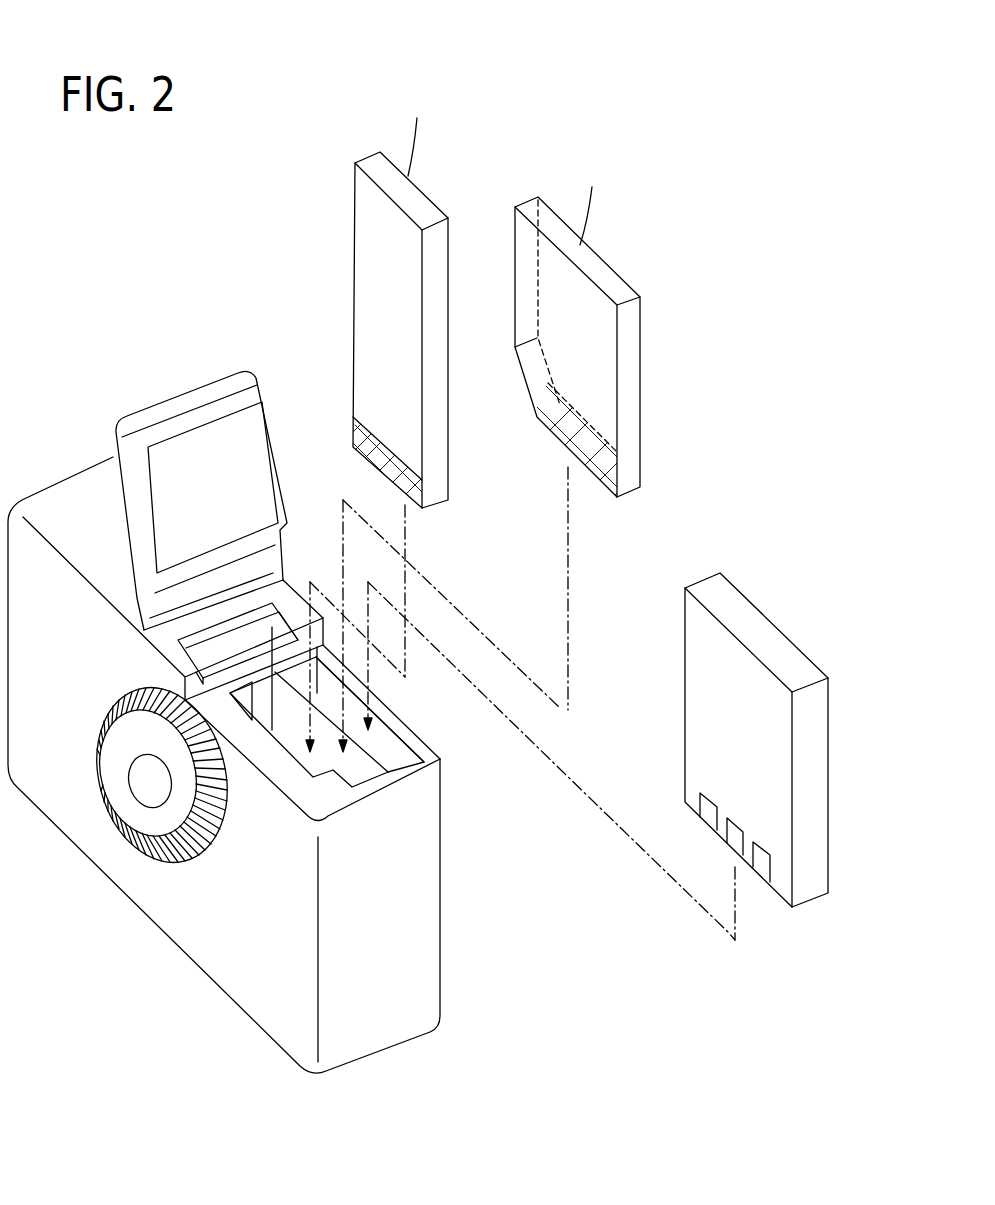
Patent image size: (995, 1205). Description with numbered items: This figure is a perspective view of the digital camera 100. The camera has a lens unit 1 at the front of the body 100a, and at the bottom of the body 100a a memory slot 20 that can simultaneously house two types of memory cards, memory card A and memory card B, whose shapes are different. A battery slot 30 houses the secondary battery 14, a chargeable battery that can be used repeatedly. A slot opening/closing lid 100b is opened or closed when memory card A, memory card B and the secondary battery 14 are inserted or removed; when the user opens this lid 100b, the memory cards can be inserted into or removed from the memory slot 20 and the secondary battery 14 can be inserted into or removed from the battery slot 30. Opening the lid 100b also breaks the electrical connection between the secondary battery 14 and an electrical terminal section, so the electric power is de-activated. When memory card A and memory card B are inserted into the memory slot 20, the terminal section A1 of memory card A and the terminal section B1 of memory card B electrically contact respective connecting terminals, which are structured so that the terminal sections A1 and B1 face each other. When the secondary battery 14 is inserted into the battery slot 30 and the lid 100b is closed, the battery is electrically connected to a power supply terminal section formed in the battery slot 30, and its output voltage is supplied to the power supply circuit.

The digital camera 100 is at (150, 286).
The body 100a is at (197, 928).
The slot opening/closing lid 100b is at (207, 389).
The lens unit 1 is at (143, 787).
The memory slot 20 is at (377, 763).
The battery slot 30 is at (400, 742).
The terminal section of memory card A A1 is at (353, 423).
The terminal section of memory card B B1 is at (642, 462).
The secondary battery 14 is at (767, 635).